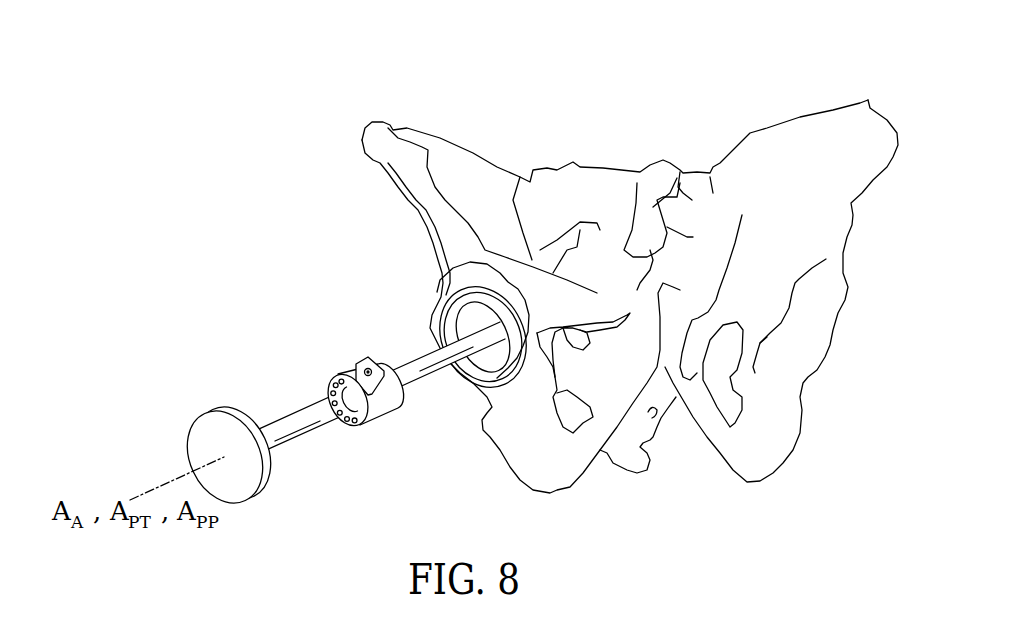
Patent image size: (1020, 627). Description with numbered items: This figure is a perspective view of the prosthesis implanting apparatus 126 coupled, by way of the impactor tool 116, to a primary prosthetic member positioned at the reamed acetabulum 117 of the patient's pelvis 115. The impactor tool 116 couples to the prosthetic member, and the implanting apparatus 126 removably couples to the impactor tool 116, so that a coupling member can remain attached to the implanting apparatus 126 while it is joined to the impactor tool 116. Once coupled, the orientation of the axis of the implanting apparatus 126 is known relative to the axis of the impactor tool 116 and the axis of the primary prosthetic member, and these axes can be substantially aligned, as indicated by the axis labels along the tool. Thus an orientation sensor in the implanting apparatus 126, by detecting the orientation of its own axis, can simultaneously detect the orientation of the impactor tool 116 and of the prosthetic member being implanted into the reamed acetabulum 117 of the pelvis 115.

The pelvis 115 is at (852, 149).
The impactor tool 116 is at (286, 414).
The reamed acetabulum 117 is at (440, 278).
The implanting apparatus 126 is at (371, 419).